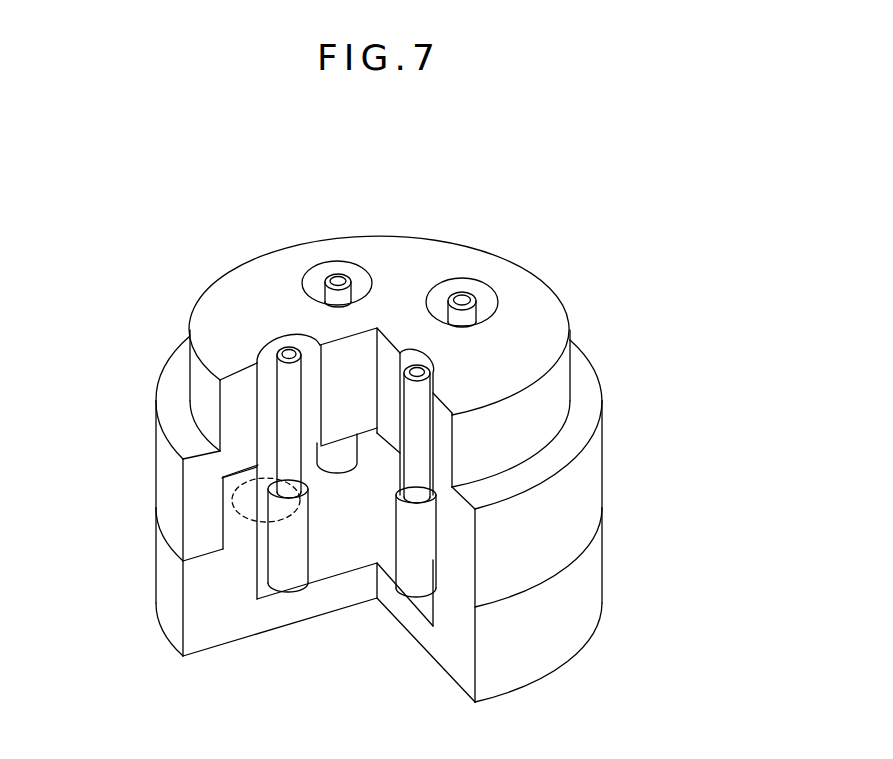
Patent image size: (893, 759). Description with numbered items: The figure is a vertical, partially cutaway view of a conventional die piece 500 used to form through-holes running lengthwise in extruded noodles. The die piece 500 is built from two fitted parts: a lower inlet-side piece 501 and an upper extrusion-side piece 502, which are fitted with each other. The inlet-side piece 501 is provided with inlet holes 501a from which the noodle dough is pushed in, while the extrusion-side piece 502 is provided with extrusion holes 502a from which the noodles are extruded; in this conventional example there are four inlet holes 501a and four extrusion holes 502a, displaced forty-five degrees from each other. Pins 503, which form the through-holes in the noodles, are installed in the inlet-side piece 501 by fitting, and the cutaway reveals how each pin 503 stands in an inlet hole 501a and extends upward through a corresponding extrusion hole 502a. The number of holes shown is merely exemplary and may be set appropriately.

The die piece 500 is at (410, 440).
The inlet-side piece 501 is at (396, 580).
The inlet hole 501a is at (232, 490).
The extrusion-side piece 502 is at (433, 402).
The extrusion hole 502a is at (268, 352).
The pin 503 is at (290, 413).